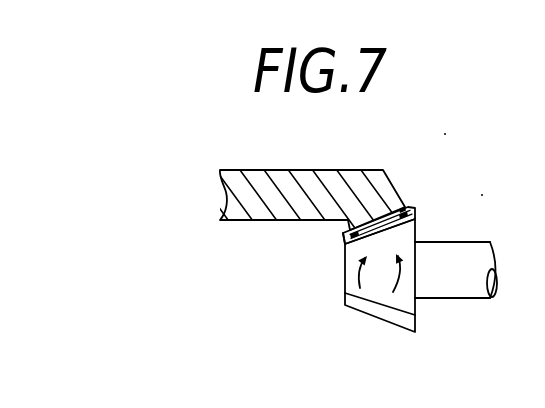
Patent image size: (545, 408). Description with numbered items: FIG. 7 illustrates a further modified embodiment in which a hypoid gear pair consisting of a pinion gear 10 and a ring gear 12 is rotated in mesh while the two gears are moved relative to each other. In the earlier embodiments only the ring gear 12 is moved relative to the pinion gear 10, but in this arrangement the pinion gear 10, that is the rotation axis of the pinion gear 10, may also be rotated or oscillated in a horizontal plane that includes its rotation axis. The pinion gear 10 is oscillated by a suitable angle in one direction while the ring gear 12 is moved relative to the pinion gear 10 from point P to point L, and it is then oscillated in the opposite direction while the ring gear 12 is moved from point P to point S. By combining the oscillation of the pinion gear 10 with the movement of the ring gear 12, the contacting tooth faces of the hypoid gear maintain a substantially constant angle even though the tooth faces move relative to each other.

The ring gear 12 is at (282, 182).
The point L is at (408, 207).
The point P is at (375, 218).
The point S is at (343, 246).
The pinion gear 10 is at (421, 264).